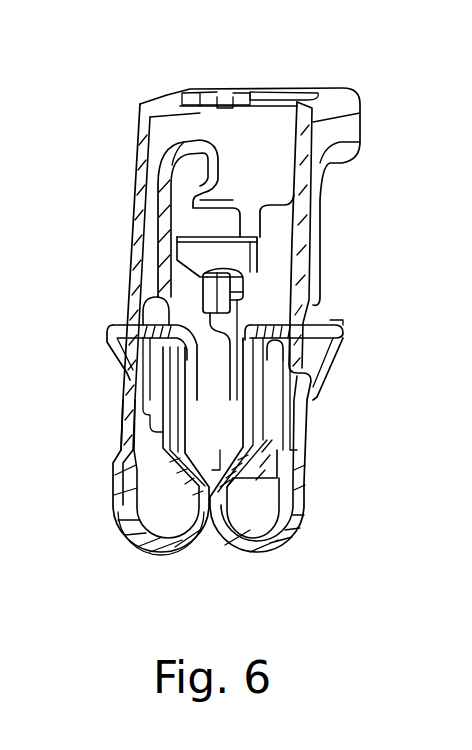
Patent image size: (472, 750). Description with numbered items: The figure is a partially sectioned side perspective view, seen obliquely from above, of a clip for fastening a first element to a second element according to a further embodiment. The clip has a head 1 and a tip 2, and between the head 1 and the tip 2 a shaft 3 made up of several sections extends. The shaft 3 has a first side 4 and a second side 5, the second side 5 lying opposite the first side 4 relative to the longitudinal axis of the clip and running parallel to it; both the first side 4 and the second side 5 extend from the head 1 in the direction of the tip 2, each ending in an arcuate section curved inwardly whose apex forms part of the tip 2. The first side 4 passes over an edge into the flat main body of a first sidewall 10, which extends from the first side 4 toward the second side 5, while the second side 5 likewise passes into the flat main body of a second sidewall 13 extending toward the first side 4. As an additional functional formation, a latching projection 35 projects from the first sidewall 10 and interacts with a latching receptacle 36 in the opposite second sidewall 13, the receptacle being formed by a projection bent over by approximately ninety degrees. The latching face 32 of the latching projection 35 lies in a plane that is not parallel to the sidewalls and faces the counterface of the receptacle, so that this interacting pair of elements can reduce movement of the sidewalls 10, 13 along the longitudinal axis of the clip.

The head 1 is at (331, 81).
The tip 2 is at (219, 553).
The shaft 3 is at (103, 365).
The first side 4 is at (321, 264).
The second side 5 is at (110, 257).
The first sidewall 10 is at (280, 222).
The second sidewall 13 is at (200, 220).
The latching face 32 is at (219, 279).
The latching projection 35 is at (213, 267).
The latching receptacle 36 is at (231, 290).